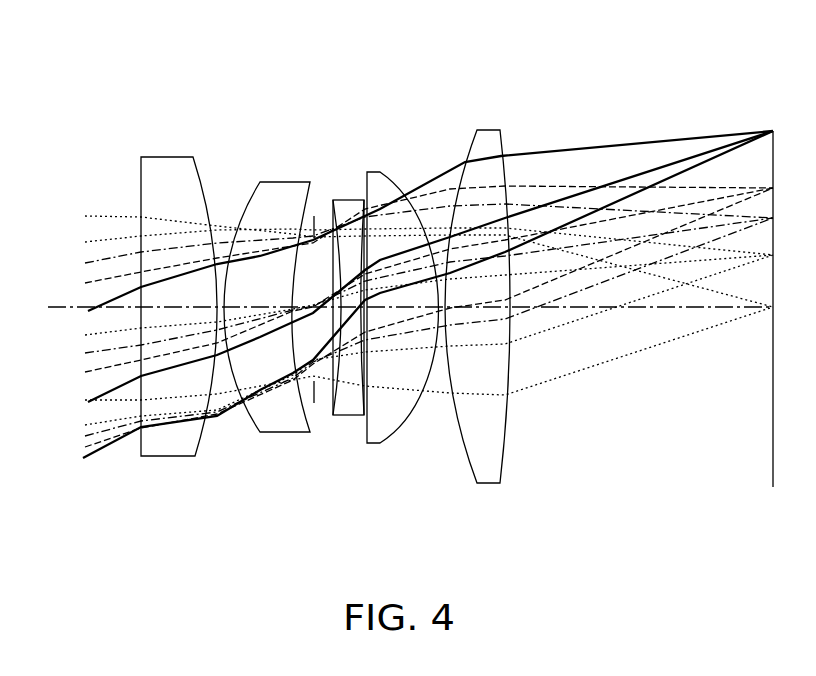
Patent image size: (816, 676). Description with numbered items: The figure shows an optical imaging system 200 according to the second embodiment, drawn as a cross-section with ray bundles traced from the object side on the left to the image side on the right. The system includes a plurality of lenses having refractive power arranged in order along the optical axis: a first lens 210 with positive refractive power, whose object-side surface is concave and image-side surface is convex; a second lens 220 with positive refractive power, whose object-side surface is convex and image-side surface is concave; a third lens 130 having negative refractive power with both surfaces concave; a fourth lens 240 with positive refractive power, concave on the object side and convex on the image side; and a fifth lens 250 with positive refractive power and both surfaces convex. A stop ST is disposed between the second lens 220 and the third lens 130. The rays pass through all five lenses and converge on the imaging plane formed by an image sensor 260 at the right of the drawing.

The optical imaging system 200 is at (367, 137).
The first lens 210 is at (157, 452).
The second lens 220 is at (258, 433).
The stop ST is at (319, 386).
The third lens 130 is at (343, 415).
The fourth lens 240 is at (379, 437).
The fifth lens 250 is at (487, 484).
The image sensor 260 is at (773, 452).